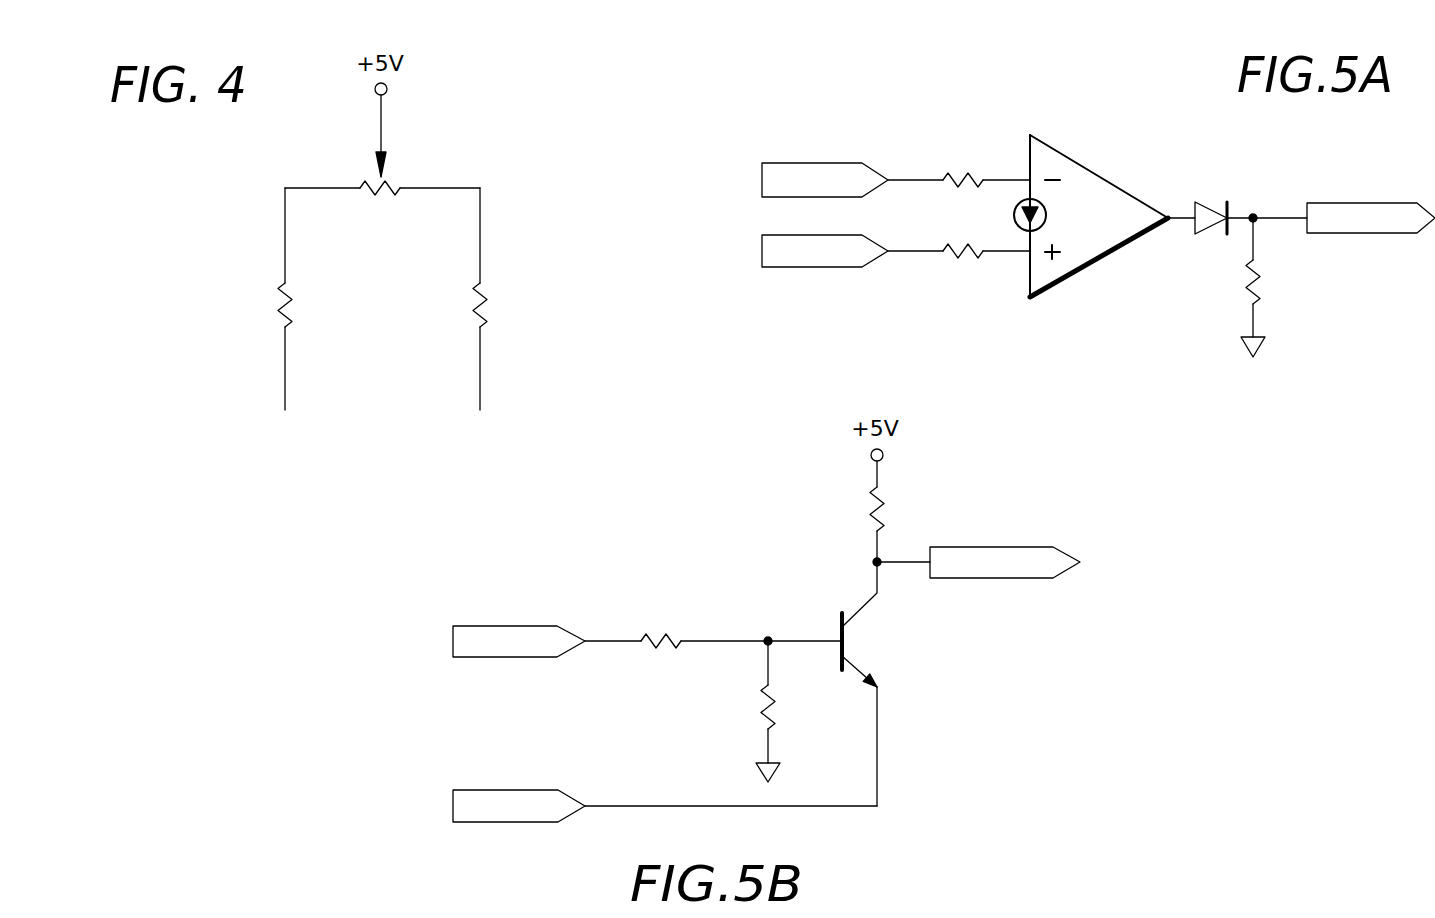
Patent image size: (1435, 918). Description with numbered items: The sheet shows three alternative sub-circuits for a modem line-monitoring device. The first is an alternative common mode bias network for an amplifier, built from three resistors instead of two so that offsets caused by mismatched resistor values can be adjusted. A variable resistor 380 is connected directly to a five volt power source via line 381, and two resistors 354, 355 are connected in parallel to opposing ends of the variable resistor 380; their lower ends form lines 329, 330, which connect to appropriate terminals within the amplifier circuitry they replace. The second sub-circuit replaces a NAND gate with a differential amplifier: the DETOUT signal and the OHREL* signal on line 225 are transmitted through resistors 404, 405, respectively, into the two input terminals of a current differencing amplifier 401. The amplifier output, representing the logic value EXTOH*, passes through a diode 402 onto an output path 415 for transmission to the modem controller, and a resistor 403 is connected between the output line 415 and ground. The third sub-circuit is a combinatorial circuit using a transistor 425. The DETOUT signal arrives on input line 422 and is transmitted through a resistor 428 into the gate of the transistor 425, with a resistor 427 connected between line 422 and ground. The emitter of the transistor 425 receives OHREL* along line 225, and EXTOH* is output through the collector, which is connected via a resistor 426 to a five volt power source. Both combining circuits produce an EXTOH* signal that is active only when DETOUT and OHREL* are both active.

In FIG. 4, the line 381 is at (382, 117).
In FIG. 4, the variable resistor 380 is at (384, 199).
In FIG. 4, the resistor 354 is at (281, 296).
In FIG. 4, the resistor 355 is at (484, 290).
In FIG. 4, the line 329 is at (284, 366).
In FIG. 4, the line 330 is at (481, 372).
In FIG. 5A, the input line 422 is at (829, 163).
In FIG. 5B, the input line 422 is at (530, 626).
In FIG. 5A, the resistor 404 is at (965, 178).
In FIG. 5A, the resistor 405 is at (958, 265).
In FIG. 5A, the current differencing amplifier 401 is at (1097, 178).
In FIG. 5A, the diode 402 is at (1208, 201).
In FIG. 5A, the output path 415 is at (1371, 203).
In FIG. 5B, the output path 415 is at (978, 562).
In FIG. 5A, the resistor 403 is at (1258, 266).
In FIG. 5A, the line 225 is at (822, 268).
In FIG. 5B, the line 225 is at (518, 790).
In FIG. 5B, the resistor 426 is at (881, 490).
In FIG. 5B, the resistor 427 is at (761, 707).
In FIG. 5B, the resistor 428 is at (665, 628).
In FIG. 5B, the transistor 425 is at (868, 644).